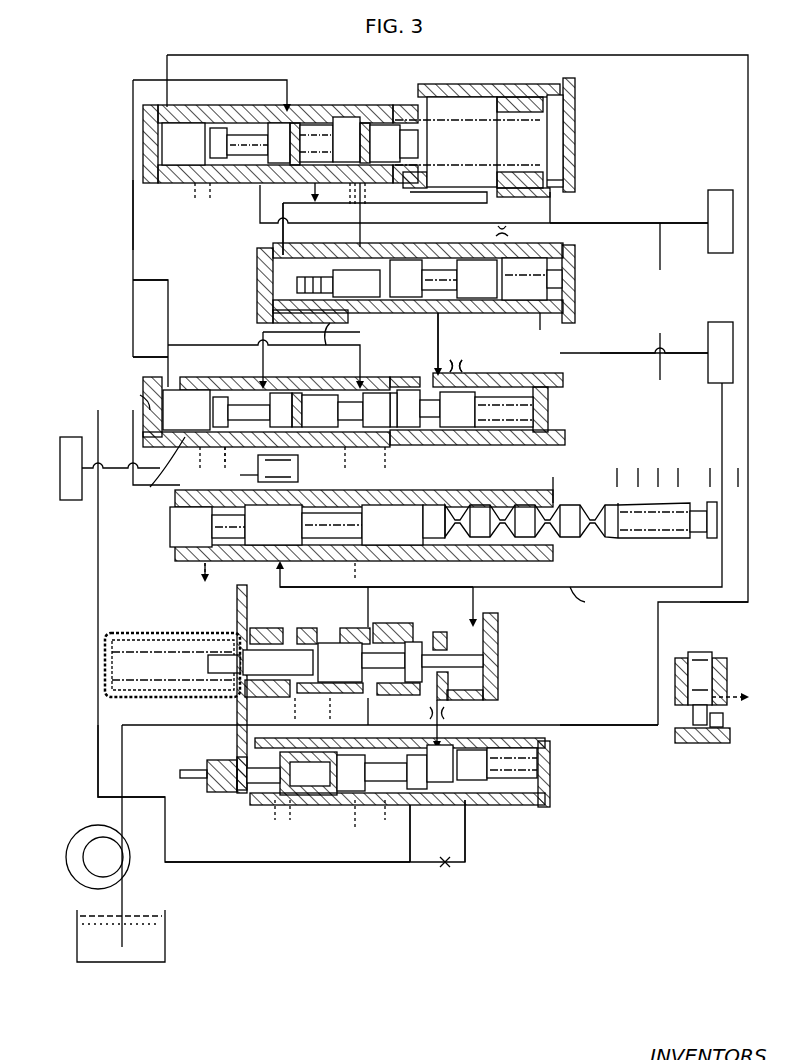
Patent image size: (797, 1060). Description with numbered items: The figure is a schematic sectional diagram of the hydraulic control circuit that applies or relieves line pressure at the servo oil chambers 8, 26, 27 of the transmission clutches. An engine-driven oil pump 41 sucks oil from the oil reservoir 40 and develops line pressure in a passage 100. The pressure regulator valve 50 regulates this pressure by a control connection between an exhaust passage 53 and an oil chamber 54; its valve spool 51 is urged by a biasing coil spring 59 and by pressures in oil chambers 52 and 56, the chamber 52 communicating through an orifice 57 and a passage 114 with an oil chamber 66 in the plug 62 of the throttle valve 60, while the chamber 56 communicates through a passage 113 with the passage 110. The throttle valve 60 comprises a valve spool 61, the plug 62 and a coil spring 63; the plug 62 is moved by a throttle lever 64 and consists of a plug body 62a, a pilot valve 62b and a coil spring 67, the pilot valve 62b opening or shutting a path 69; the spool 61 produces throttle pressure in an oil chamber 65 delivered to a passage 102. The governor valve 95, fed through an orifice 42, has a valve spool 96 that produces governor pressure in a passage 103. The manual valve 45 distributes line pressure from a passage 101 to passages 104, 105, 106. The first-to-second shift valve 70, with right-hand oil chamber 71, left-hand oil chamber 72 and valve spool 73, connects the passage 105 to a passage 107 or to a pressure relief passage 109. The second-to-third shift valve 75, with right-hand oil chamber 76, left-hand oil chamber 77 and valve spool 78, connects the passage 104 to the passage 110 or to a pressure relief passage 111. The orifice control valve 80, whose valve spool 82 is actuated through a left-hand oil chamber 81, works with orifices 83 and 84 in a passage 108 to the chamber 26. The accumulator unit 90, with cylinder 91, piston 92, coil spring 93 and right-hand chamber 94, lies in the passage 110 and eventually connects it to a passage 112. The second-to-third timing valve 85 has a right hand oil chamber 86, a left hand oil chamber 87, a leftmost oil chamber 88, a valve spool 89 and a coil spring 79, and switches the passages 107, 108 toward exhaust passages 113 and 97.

The oil chamber 8 is at (72, 500).
The servo oil chamber 26 is at (708, 336).
The servo oil chamber 27 is at (708, 210).
The oil reservoir 40 is at (137, 925).
The oil pump 41 is at (95, 826).
The orifice 42 is at (628, 722).
The manual valve 45 is at (560, 543).
The pressure regulator valve 50 is at (498, 665).
The valve spool 51 is at (340, 662).
The oil chamber 52 is at (290, 628).
The exhaust passage 53 is at (345, 628).
The oil chamber 54 is at (380, 628).
The oil chamber 56 is at (462, 628).
The orifice 57 is at (290, 720).
The biasing coil spring 59 is at (168, 636).
The throttle valve 60 is at (555, 779).
The valve spool 61 is at (482, 763).
The plug 62 is at (240, 758).
The plug body 62a is at (305, 800).
The pilot valve 62b is at (252, 790).
The coil spring 63 is at (352, 800).
The throttle lever 64 is at (180, 776).
The oil chamber 65 is at (437, 831).
The oil chamber 66 is at (237, 718).
The coil spring 67 is at (262, 797).
The path 69 is at (280, 805).
The 1-2 shift valve 70 is at (207, 406).
The right-hand oil chamber 71 is at (368, 447).
The left-hand oil chamber 72 is at (157, 475).
The valve spool 73 is at (225, 390).
The 2-3 shift valve 75 is at (150, 183).
The right-hand oil chamber 76 is at (352, 118).
The left-hand oil chamber 77 is at (185, 122).
The valve spool 78 is at (240, 165).
The coil spring 79 is at (275, 290).
The orifice control valve 80 is at (575, 410).
The left-hand oil chamber 81 is at (395, 445).
The valve spool 82 is at (465, 408).
The orifice 83 is at (450, 340).
The orifice 84 is at (460, 368).
The 2-3 timing valve 85 is at (576, 288).
The right hand oil chamber 86 is at (537, 314).
The left hand oil chamber 87 is at (365, 236).
The leftmost oil chamber 88 is at (297, 285).
The valve spool 89 is at (476, 279).
The accumulator unit 90 is at (575, 124).
The cylinder 91 is at (458, 97).
The piston 92 is at (515, 97).
The coil spring 93 is at (400, 120).
The right-hand chamber 94 is at (575, 178).
The governor valve 95 is at (740, 730).
The valve spool 96 is at (690, 652).
The exhaust passage 97 is at (326, 345).
The passage 100 is at (165, 727).
The passage 101 is at (295, 587).
The passage 102 is at (130, 352).
The passage 103 is at (128, 279).
The passage 104 is at (133, 213).
The passage 105 is at (298, 467).
The passage 106 is at (240, 477).
The passage 107 is at (352, 345).
The passage 108 is at (610, 353).
The pressure relief passage 109 is at (225, 450).
The passage 110 is at (618, 223).
The pressure relief passage 111 is at (206, 169).
The passage 112 is at (374, 193).
The exhaust passage 113 is at (440, 327).
The passage 114 is at (344, 713).